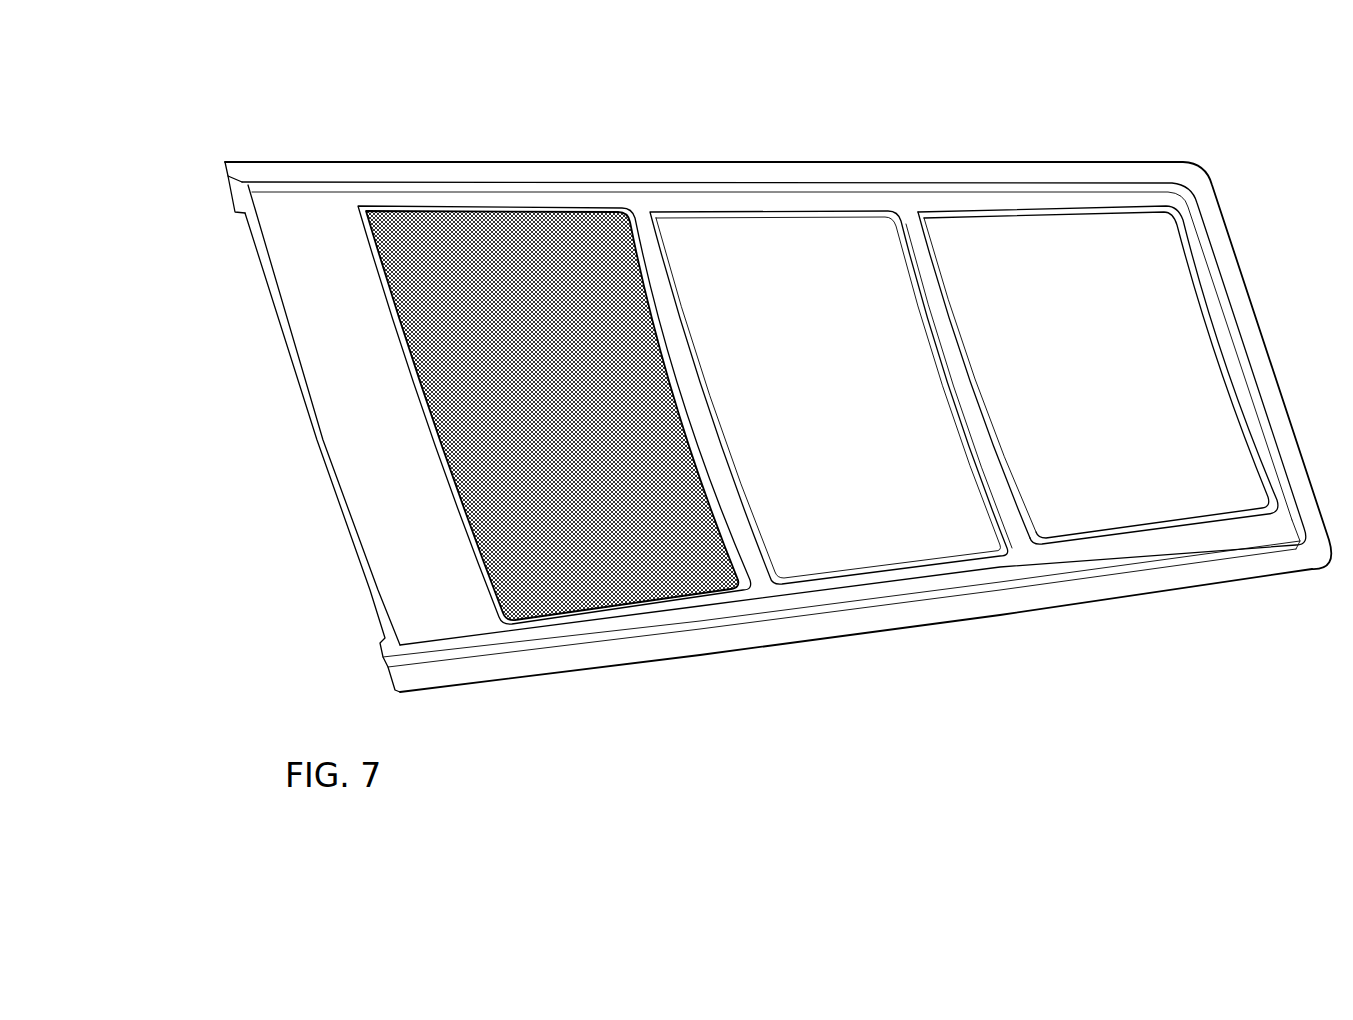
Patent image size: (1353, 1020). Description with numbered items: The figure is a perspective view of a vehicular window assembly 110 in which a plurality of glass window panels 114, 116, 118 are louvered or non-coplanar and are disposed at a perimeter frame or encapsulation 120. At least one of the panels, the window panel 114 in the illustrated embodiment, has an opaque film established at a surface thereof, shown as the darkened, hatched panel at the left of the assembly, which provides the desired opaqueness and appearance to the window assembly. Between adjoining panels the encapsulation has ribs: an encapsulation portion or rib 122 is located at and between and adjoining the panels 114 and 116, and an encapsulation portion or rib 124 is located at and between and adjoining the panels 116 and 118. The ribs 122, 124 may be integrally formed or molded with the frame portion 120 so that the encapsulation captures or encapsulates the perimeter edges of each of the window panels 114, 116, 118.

The vehicular window assembly 110 is at (323, 123).
The glass window panel 114 is at (555, 480).
The glass window panel 116 is at (778, 298).
The glass window panel 118 is at (1027, 273).
The perimeter frame or encapsulation 120 is at (296, 388).
The encapsulation portion or rib 122 is at (720, 490).
The encapsulation portion or rib 124 is at (987, 470).